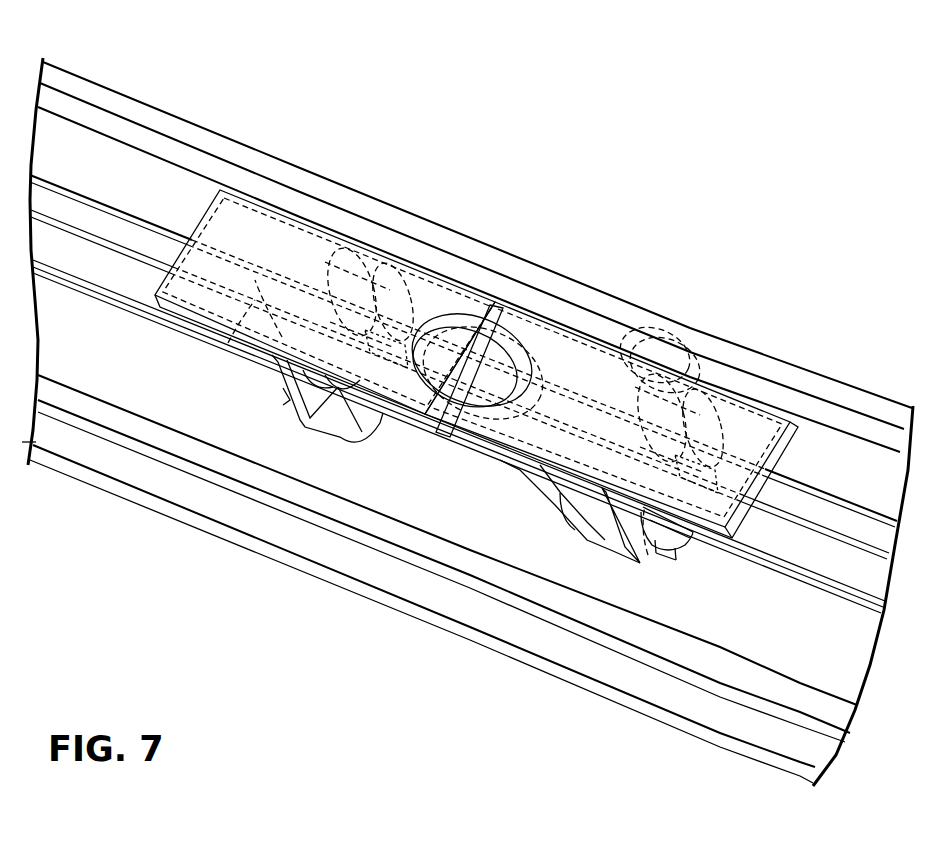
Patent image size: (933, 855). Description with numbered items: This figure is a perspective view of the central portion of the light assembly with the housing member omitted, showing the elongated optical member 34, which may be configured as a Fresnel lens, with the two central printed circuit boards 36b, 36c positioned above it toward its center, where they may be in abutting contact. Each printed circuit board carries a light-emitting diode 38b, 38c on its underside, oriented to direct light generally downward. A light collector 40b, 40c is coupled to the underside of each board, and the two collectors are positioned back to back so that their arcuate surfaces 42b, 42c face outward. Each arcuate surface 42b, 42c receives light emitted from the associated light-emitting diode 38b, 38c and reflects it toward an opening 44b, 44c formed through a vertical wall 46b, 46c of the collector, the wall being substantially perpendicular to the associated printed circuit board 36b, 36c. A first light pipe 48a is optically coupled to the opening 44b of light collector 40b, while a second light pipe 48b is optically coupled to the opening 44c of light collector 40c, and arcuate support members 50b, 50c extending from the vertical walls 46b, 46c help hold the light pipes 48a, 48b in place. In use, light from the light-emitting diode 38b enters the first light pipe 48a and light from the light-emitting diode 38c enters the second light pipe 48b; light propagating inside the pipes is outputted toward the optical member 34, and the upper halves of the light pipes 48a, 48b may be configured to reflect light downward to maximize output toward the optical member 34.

The optical member 34 is at (777, 378).
The printed circuit board 36b is at (308, 243).
The printed circuit board 36c is at (565, 347).
The light-emitting diode 38b is at (427, 253).
The light-emitting diode 38c is at (633, 333).
The light collector 40b is at (325, 432).
The light collector 40c is at (615, 551).
The arcuate surface 42b is at (333, 420).
The arcuate surface 42c is at (560, 512).
The opening 44b is at (282, 337).
The opening 44c is at (648, 555).
The vertical wall 46b is at (390, 313).
The vertical wall 46c is at (682, 413).
The first light pipe 48a is at (120, 237).
The second light pipe 48b is at (827, 523).
The arcuate support member 50b is at (228, 343).
The arcuate support member 50c is at (687, 547).